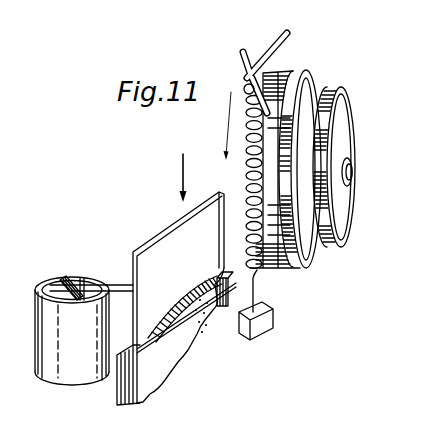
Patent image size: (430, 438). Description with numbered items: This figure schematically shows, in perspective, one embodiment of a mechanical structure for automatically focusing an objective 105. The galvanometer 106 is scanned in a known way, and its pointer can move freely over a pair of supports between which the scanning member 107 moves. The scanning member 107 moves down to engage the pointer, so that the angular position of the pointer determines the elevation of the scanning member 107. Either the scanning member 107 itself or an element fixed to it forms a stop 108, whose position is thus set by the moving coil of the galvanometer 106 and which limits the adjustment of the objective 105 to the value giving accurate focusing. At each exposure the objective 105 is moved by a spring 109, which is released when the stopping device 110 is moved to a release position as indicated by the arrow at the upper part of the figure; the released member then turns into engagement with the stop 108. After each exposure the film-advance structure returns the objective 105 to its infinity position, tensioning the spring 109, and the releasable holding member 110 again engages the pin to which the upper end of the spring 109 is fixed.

The objective 105 is at (347, 164).
The galvanometer 106 is at (45, 281).
The scanning member 107 is at (158, 241).
The stop 108 is at (228, 192).
The spring 109 is at (262, 278).
The stopping device 110 is at (292, 51).